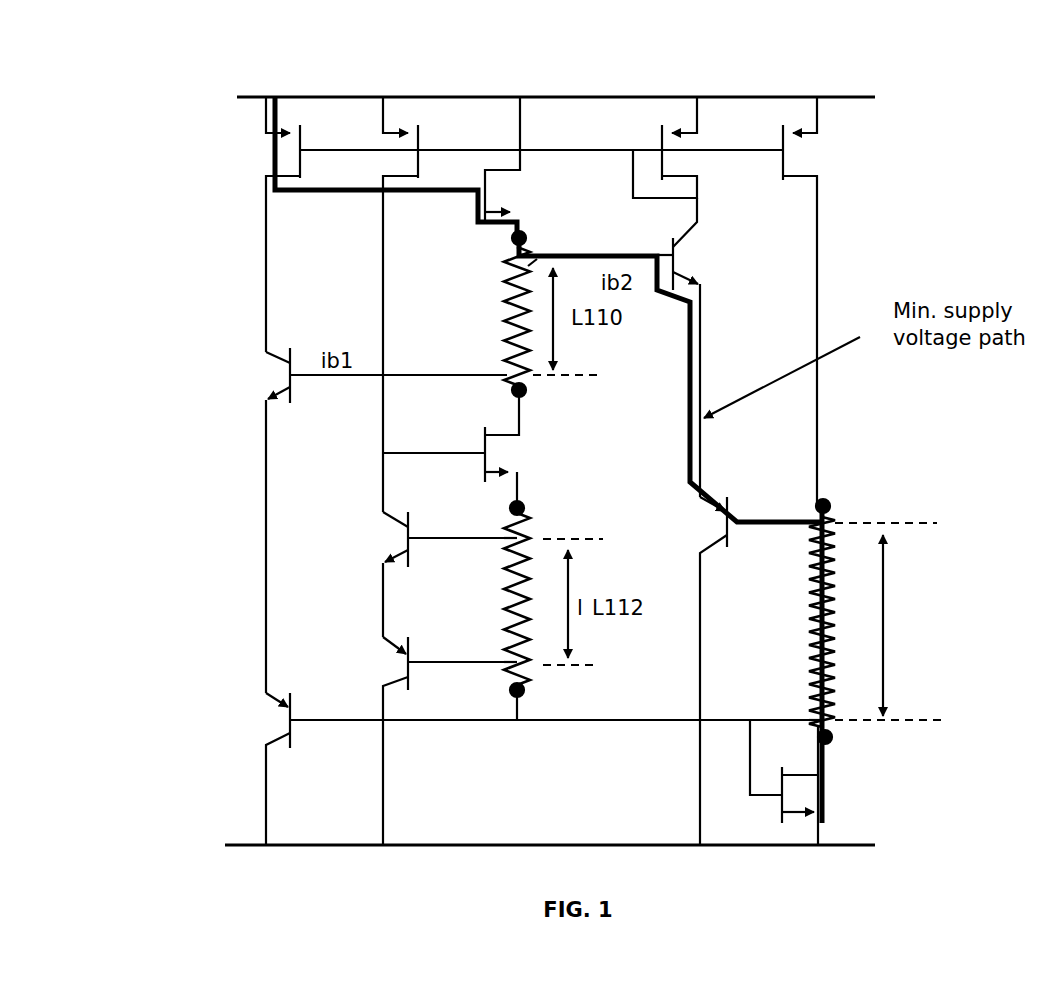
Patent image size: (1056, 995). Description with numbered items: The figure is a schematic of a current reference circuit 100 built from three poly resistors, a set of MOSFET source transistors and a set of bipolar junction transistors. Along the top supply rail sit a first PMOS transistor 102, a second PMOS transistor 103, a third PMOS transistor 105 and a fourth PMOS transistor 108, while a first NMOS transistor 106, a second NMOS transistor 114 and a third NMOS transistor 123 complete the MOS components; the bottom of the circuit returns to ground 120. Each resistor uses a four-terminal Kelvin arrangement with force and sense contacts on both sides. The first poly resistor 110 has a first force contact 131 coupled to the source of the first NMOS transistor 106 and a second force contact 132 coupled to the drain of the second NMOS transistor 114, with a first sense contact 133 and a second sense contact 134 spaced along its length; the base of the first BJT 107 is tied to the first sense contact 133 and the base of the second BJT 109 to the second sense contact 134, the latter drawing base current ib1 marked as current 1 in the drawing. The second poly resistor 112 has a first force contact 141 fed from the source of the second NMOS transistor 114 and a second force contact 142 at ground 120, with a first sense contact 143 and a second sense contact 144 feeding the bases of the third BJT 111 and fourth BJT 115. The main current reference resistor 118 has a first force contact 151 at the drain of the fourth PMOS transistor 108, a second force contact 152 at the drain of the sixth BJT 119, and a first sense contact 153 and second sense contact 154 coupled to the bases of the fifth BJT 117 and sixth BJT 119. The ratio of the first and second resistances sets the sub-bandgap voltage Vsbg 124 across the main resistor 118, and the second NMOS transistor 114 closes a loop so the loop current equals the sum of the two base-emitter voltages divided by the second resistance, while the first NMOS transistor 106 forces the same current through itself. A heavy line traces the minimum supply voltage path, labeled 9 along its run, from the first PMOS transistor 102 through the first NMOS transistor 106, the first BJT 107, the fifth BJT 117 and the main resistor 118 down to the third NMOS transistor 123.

The current reference circuit 100 is at (934, 136).
The first PMOS transistor 102 is at (268, 105).
The second PMOS transistor 103 is at (385, 107).
The third PMOS transistor 105 is at (688, 115).
The first NMOS transistor 106 is at (515, 185).
The first BJT 107 is at (687, 245).
The fourth PMOS transistor 108 is at (817, 113).
The second BJT 109 is at (270, 385).
The first poly resistor 110 is at (500, 300).
The third BJT 111 is at (387, 557).
The second poly resistor 112 is at (510, 607).
The second NMOS transistor 114 is at (498, 463).
The fourth BJT 115 is at (387, 680).
The fifth BJT 117 is at (708, 503).
The main current reference resistor 118 is at (808, 625).
The sixth BJT 119 is at (260, 742).
The ground 120 is at (637, 843).
The third NMOS transistor 123 is at (783, 812).
The bandgap voltage Vsbg 124 is at (885, 665).
The first force contact 131 is at (511, 241).
The second force contact 132 is at (515, 386).
The first sense contact 133 is at (556, 50).
The second sense contact 134 is at (503, 378).
The first force contact 141 is at (510, 507).
The second force contact 142 is at (510, 692).
The first sense contact 143 is at (513, 540).
The second sense contact 144 is at (505, 663).
The first force contact 151 is at (838, 503).
The second force contact 152 is at (837, 745).
The first sense contact 153 is at (817, 530).
The second sense contact 154 is at (835, 718).
The current label 1 is at (255, 553).
The current label 9 is at (715, 388).